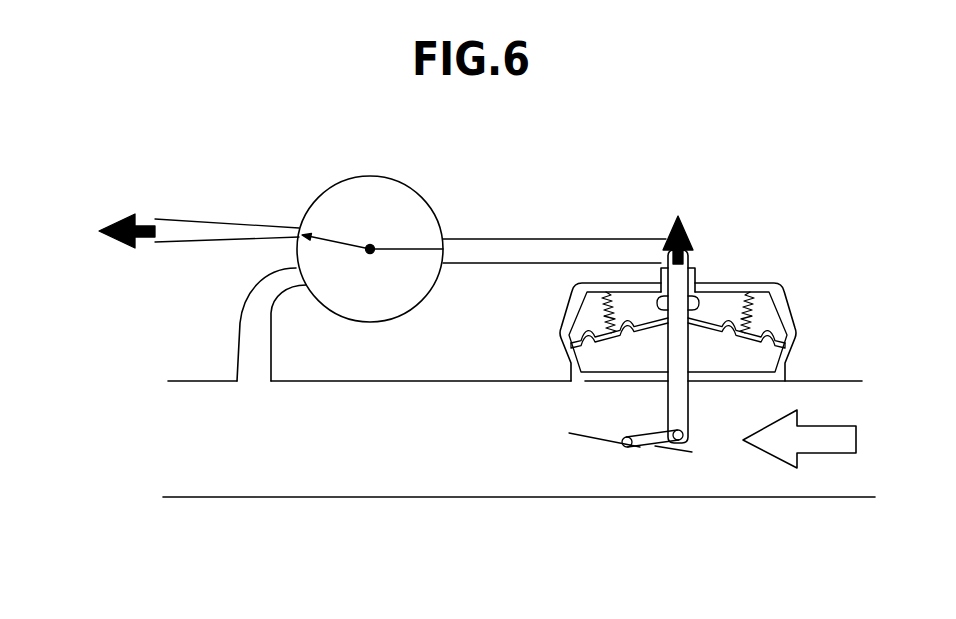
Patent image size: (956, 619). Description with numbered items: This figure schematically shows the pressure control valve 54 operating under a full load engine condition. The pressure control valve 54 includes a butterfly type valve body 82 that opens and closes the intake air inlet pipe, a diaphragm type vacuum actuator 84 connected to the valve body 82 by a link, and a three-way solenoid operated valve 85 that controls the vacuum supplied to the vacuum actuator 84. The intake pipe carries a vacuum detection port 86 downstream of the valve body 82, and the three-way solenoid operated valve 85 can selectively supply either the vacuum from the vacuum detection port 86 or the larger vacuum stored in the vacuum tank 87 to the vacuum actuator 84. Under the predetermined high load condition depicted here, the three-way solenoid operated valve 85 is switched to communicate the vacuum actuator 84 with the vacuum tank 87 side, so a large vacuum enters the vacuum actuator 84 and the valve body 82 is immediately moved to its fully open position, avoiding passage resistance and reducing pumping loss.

The pressure control valve 54 is at (582, 465).
The valve body 82 is at (668, 449).
The vacuum actuator 84 is at (737, 282).
The three-way solenoid operated valve 85 is at (428, 198).
The vacuum detection port 86 is at (245, 365).
The vacuum tank 87 is at (181, 231).